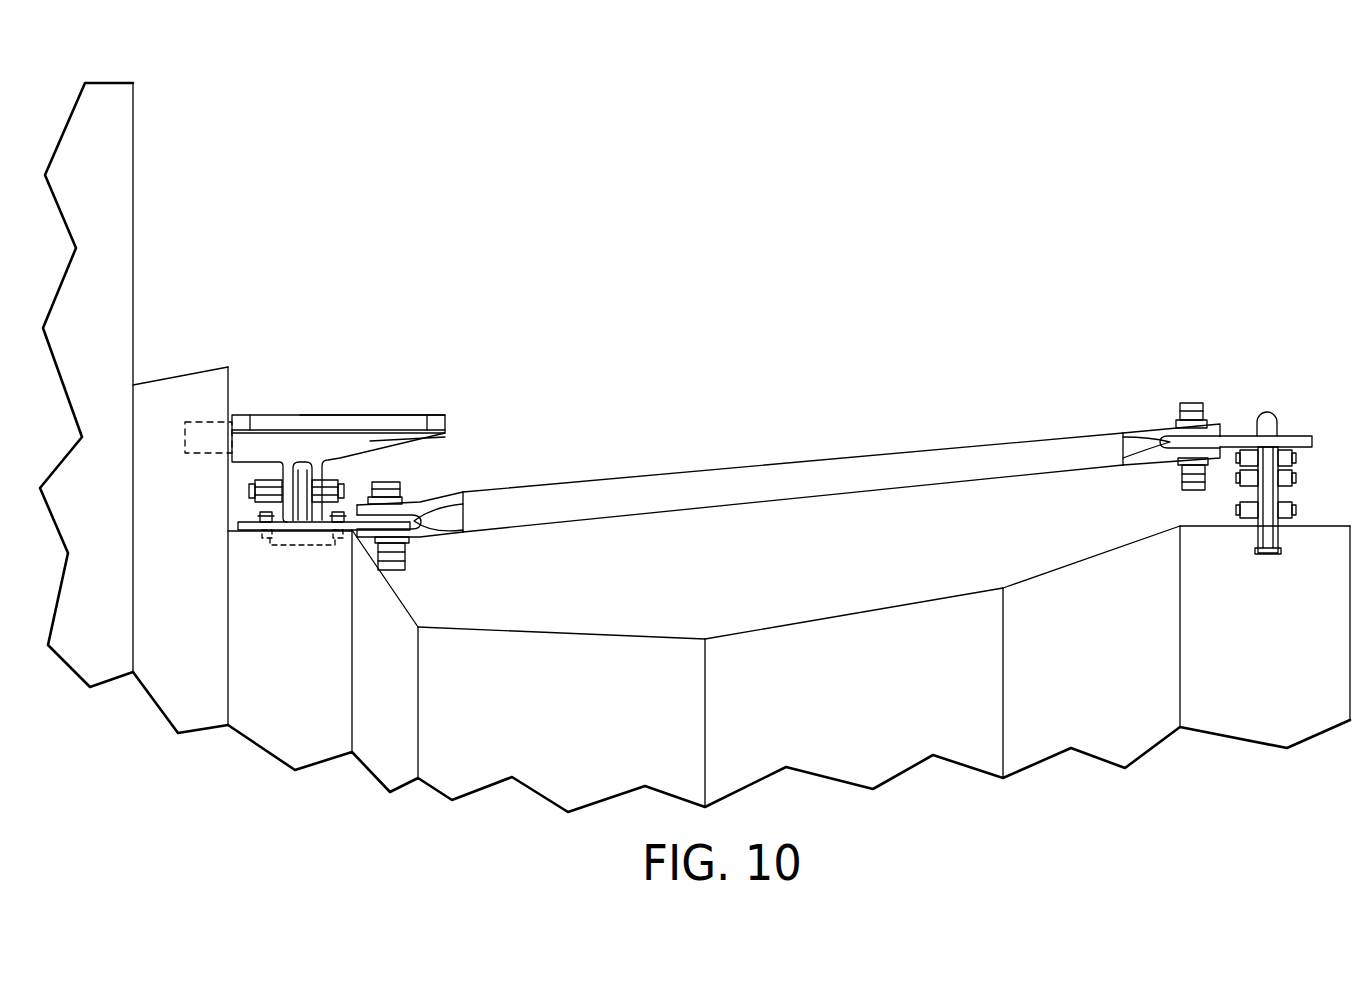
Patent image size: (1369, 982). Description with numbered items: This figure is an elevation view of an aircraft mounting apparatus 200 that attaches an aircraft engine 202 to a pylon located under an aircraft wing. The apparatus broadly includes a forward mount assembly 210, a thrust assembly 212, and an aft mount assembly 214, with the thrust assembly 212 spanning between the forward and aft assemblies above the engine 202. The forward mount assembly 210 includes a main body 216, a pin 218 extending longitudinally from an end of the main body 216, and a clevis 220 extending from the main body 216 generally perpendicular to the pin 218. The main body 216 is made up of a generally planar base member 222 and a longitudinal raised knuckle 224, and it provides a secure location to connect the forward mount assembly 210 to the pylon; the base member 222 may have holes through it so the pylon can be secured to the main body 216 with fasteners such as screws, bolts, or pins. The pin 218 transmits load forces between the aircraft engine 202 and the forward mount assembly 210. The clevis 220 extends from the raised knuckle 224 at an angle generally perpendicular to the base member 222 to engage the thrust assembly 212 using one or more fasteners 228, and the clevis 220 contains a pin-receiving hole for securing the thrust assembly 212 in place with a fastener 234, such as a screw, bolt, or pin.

The aircraft mounting apparatus 200 is at (1160, 197).
The aircraft engine 202 is at (1132, 727).
The forward mount assembly 210 is at (348, 379).
The thrust assembly 212 is at (790, 372).
The aft mount assembly 214 is at (1297, 362).
The main body 216 is at (438, 423).
The pin 218 is at (203, 423).
The clevis 220 is at (313, 468).
The base member 222 is at (392, 420).
The raised knuckle 224 is at (373, 440).
The fasteners 228 is at (258, 513).
The fastener 234 is at (255, 488).